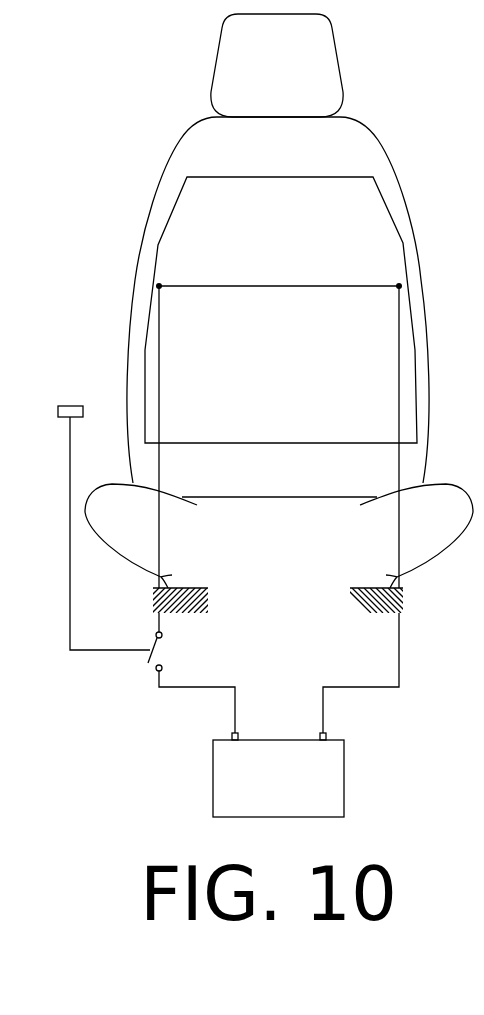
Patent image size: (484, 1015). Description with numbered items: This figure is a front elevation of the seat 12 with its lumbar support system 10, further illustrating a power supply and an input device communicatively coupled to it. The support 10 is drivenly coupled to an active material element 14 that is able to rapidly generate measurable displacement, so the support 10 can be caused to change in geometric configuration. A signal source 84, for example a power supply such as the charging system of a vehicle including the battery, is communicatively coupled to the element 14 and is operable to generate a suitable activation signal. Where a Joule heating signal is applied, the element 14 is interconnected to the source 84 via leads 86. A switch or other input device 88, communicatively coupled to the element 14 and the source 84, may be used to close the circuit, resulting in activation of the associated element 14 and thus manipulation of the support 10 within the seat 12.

The lumbar support system 10 is at (128, 162).
The seat 12 is at (135, 280).
The active material element 14 is at (295, 286).
The signal source 84 is at (298, 795).
The leads 86 is at (362, 688).
The input device 88 is at (58, 407).